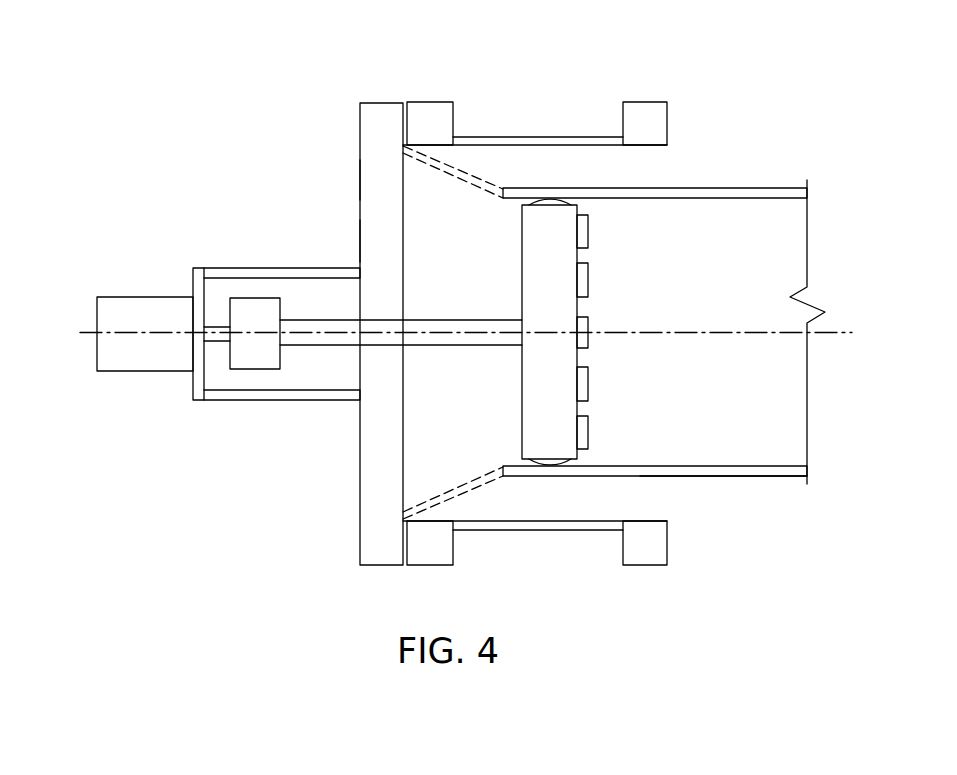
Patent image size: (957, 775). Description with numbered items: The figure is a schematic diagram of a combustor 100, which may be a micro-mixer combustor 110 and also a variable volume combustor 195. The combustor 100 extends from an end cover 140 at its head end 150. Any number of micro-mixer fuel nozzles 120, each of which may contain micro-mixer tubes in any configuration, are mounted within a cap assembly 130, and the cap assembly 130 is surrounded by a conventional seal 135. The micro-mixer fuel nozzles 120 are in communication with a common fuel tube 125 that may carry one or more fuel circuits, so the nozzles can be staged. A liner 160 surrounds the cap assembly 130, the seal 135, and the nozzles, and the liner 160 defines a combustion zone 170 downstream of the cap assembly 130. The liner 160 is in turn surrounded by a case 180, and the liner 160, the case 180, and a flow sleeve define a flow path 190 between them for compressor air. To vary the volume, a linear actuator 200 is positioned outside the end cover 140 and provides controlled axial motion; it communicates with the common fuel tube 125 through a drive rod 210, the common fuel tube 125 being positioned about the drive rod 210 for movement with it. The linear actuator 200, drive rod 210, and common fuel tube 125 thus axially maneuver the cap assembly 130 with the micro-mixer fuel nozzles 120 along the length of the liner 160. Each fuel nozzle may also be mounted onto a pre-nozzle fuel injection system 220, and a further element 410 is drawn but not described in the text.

The combustor 100 is at (236, 63).
The micro-mixer combustor 110 is at (358, 119).
The micro-mixer fuel nozzles 120 is at (588, 279).
The common fuel tube 125 is at (470, 320).
The cap assembly 130 is at (591, 211).
The seal 135 is at (522, 205).
The end cover 140 is at (360, 181).
The head end 150 is at (452, 207).
The liner 160 is at (787, 478).
The combustion zone 170 is at (780, 317).
The case 180 is at (537, 531).
The flow path 190 is at (667, 498).
The variable volume combustor 195 is at (358, 241).
The linear actuator 200 is at (144, 297).
The drive rod 210 is at (220, 326).
The pre-nozzle fuel injection system 220 is at (583, 465).
The coupling block 410 is at (360, 320).